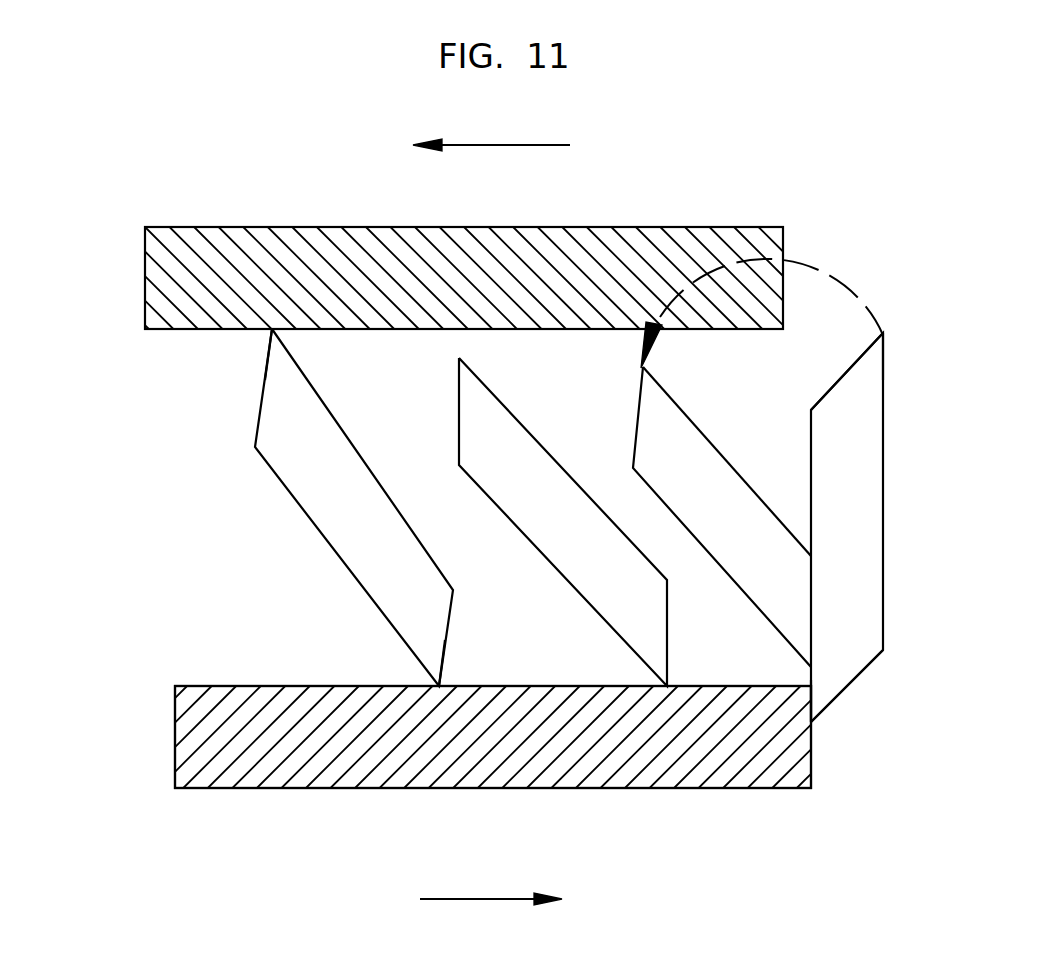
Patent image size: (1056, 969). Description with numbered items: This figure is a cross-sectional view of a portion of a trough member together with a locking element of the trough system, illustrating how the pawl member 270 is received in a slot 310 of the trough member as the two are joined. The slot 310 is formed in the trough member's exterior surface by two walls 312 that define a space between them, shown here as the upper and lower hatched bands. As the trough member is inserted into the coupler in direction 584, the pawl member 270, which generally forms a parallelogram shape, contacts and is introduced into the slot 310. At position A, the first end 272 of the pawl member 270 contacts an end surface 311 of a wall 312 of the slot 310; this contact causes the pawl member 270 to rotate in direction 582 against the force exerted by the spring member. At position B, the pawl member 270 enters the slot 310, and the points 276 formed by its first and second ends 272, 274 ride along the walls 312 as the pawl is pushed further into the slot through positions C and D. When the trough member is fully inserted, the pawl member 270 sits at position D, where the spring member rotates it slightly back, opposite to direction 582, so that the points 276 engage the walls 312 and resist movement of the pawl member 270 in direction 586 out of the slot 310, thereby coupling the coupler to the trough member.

The pawl member 270 is at (575, 522).
The first end 272 is at (862, 648).
The second end 274 is at (872, 372).
The points 276 is at (272, 329).
The slot 310 is at (707, 373).
The end surface 311 is at (811, 768).
The walls 312 is at (441, 247).
The direction 582 is at (825, 273).
The direction 584 is at (502, 145).
The direction 586 is at (475, 899).
The position A is at (865, 417).
The position B is at (790, 623).
The position C is at (641, 644).
The position D is at (423, 642).